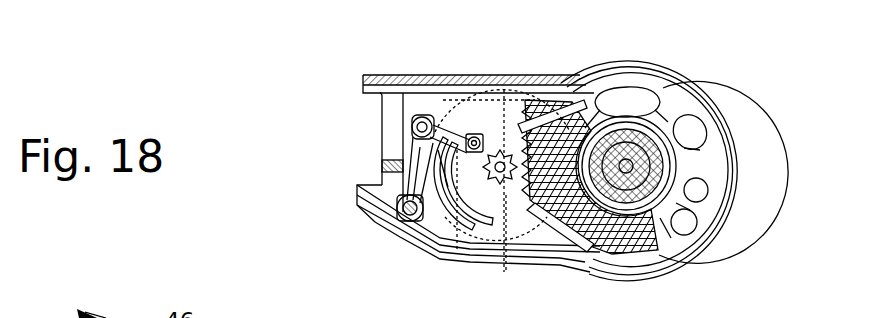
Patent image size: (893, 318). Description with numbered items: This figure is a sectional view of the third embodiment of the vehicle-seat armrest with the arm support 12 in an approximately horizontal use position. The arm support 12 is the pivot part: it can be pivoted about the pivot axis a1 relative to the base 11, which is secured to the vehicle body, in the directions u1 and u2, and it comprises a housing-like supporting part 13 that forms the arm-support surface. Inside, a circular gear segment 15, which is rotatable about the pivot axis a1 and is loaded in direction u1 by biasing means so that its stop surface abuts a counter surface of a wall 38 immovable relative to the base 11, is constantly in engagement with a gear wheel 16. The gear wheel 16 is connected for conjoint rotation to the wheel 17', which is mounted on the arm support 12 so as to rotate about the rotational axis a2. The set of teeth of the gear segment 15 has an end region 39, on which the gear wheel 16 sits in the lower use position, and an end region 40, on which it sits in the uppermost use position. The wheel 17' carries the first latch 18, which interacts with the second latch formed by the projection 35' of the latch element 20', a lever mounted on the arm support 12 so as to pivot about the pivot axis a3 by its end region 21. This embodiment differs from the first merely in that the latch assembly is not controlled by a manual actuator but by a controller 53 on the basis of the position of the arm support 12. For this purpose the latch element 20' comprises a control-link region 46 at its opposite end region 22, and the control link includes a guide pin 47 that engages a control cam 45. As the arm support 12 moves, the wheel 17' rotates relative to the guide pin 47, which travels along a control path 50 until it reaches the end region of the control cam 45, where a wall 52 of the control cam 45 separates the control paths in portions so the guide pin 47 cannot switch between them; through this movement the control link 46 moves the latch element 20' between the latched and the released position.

The base 11 is at (688, 200).
The arm support 12 is at (365, 77).
The supporting part 13 is at (702, 95).
The circular gear segment 15 is at (590, 266).
The gear wheel 16 is at (500, 157).
The wheel 17' is at (502, 74).
The first latch 18 is at (453, 112).
The latch element 20' is at (344, 196).
The end region 21 is at (405, 222).
The end region 22 is at (395, 118).
The projection 35' is at (426, 224).
The wall 38 is at (683, 262).
The end region 39 is at (536, 250).
The end region 40 is at (563, 80).
The control cam 45 is at (544, 104).
The control-link region 46 is at (418, 116).
The guide pin 47 is at (477, 117).
The control path 50 is at (495, 135).
The wall 52 is at (460, 224).
The controller 53 is at (382, 165).
The pivot axis a1 is at (628, 166).
The rotational axis a2 is at (506, 235).
The pivot axis a3 is at (365, 225).
The direction u1 is at (283, 237).
The direction u2 is at (282, 95).